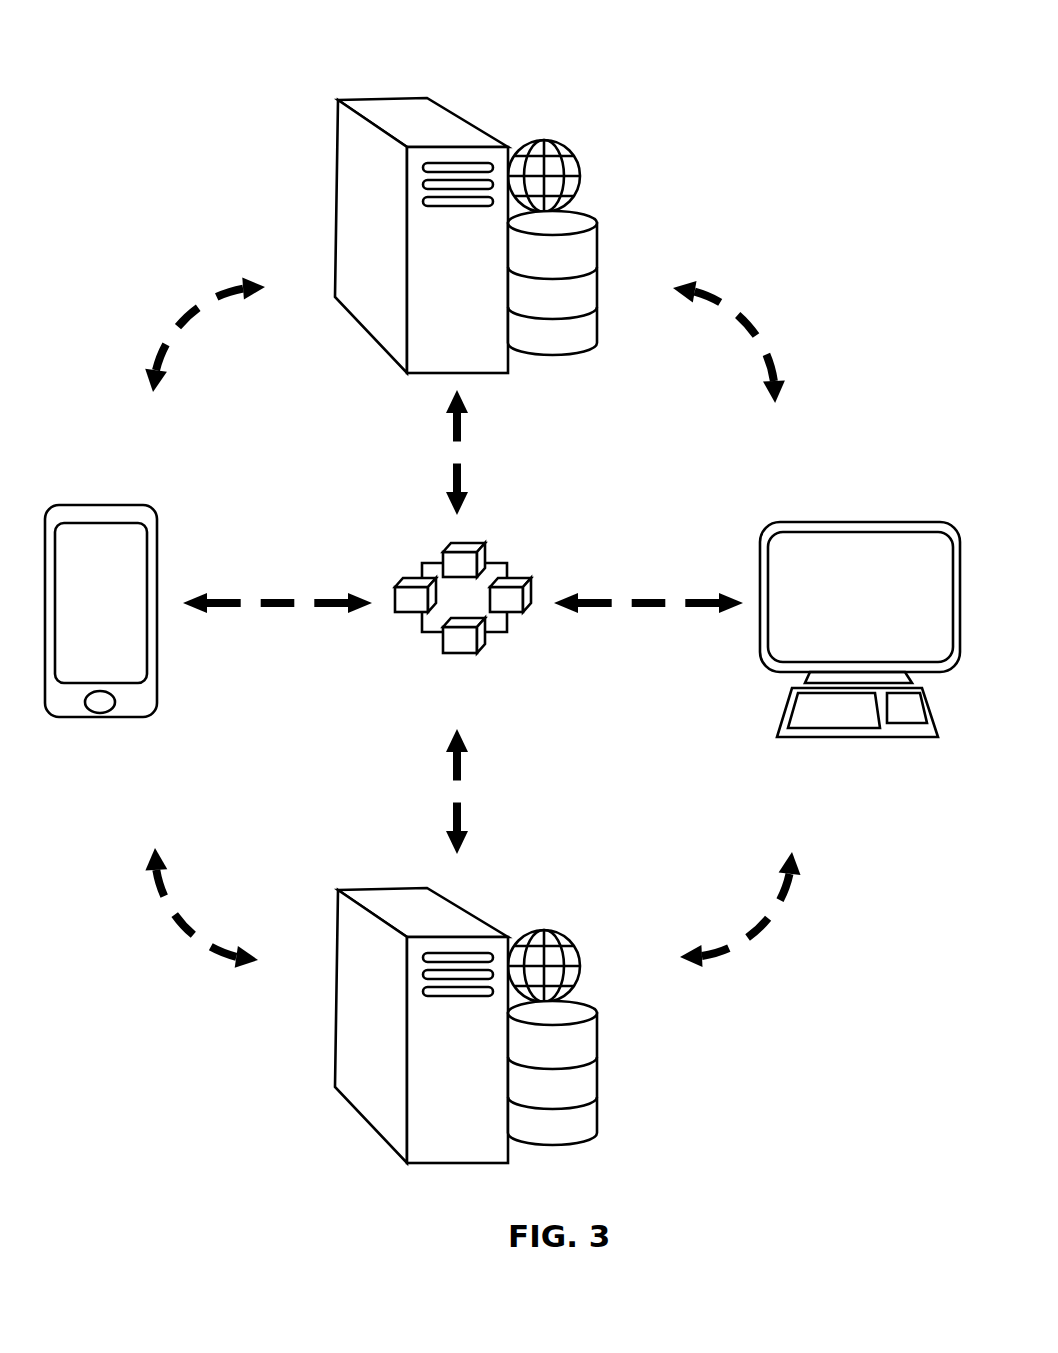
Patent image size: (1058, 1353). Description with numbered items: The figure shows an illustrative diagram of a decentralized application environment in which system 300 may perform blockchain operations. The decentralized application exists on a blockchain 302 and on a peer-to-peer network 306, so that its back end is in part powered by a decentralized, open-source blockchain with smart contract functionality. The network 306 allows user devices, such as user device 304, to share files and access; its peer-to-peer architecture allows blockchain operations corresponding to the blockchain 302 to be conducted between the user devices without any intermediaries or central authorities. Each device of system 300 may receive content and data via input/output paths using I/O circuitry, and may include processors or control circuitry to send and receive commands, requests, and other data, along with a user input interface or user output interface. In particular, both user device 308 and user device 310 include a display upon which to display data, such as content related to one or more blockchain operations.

The system 300 is at (567, 43).
The blockchain 302 is at (510, 679).
The user device 304 is at (559, 390).
The network 306 is at (186, 279).
The user device 308 is at (146, 746).
The user device 310 is at (744, 698).